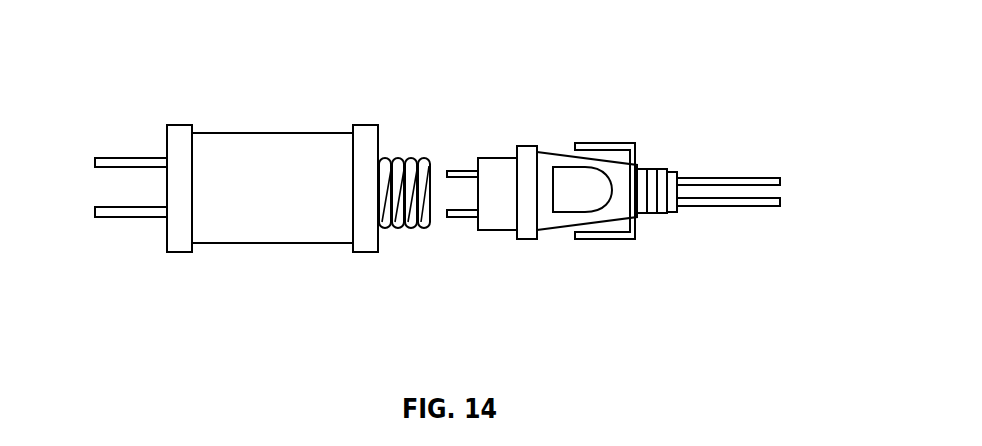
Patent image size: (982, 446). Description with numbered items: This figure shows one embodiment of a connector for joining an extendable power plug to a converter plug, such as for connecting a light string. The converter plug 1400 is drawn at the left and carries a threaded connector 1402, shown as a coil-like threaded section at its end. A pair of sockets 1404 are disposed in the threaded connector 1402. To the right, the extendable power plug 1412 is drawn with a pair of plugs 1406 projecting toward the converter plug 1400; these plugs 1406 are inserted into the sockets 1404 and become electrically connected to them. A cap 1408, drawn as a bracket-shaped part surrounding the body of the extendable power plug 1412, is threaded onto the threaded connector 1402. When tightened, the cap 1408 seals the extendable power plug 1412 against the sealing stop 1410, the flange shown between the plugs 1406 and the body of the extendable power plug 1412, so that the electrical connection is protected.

The converter plug 1400 is at (250, 268).
The threaded connector 1402 is at (392, 158).
The sockets 1404 is at (405, 232).
The plugs 1406 is at (463, 212).
The cap 1408 is at (593, 143).
The sealing stop 1410 is at (523, 237).
The extendable power plug 1412 is at (657, 152).